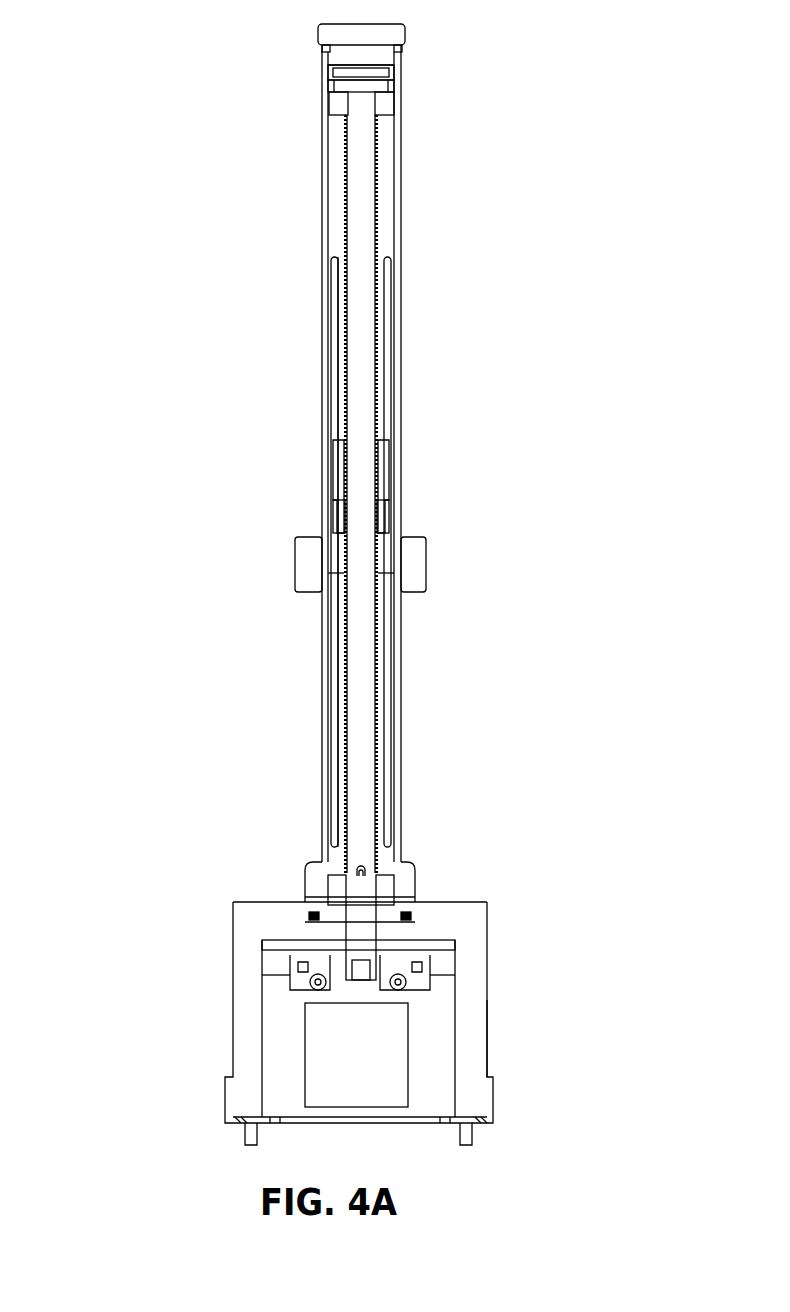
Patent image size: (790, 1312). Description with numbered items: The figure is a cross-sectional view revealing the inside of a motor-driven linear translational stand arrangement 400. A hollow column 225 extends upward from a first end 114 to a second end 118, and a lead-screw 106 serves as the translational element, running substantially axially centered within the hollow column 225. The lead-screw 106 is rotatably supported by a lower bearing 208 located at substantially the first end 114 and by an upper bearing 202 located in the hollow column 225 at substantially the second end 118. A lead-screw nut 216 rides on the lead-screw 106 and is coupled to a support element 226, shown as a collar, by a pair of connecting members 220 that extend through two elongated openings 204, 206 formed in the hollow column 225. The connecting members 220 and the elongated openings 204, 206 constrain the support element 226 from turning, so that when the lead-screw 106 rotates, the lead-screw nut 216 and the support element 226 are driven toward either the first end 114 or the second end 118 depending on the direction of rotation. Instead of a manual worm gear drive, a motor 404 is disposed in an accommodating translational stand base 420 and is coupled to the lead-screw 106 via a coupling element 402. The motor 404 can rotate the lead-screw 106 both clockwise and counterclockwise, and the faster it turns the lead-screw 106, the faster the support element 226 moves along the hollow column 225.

The linear translational stand arrangement 400 is at (102, 98).
The second end 118 is at (278, 45).
The upper bearing 202 is at (385, 102).
The lead-screw 106 is at (363, 386).
The hollow column 225 is at (321, 313).
The elongated opening 204 is at (388, 765).
The elongated opening 206 is at (332, 760).
The lead-screw nut 216 is at (382, 467).
The connecting members 220 is at (333, 548).
The support element 226 is at (293, 560).
The first end 114 is at (297, 884).
The lower bearing 208 is at (388, 887).
The coupling element 402 is at (372, 1000).
The motor 404 is at (305, 1070).
The translational stand base 420 is at (487, 1053).